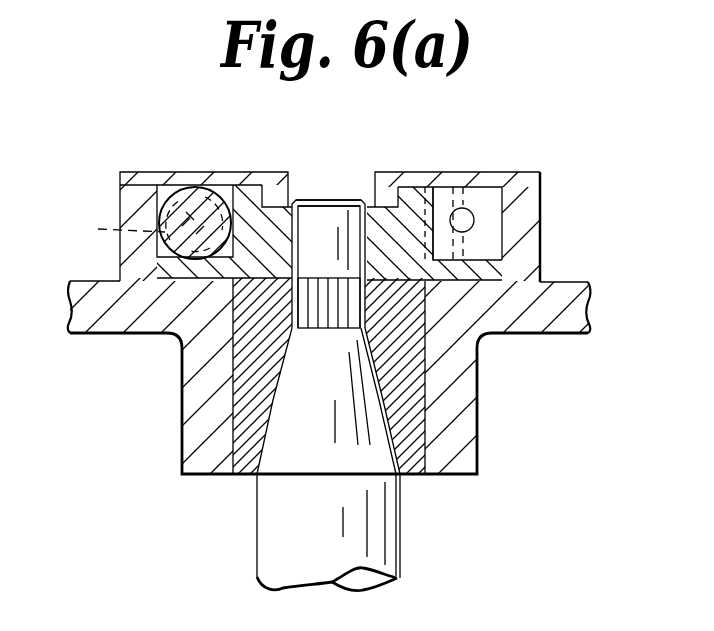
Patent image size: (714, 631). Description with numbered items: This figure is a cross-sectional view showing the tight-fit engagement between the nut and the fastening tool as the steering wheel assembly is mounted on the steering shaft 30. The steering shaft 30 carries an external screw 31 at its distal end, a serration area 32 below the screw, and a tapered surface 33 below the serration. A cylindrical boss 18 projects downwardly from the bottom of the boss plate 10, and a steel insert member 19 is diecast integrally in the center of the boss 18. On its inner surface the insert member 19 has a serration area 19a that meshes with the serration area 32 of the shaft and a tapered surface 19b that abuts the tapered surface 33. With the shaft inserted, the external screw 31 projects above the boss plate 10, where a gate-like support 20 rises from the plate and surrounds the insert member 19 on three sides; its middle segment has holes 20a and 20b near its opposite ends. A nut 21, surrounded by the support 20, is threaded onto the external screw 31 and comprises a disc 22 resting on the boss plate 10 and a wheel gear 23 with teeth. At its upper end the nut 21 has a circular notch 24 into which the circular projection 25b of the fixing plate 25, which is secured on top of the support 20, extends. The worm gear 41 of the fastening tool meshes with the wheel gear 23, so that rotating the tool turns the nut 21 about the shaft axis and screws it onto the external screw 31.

The boss plate 10 is at (592, 312).
The cylindrical boss 18 is at (478, 445).
The insert member 19 is at (413, 467).
The serration area 19a is at (356, 304).
The tapered surface 19b is at (257, 480).
The support 20 is at (120, 190).
The hole 20a is at (110, 223).
The hole 20b is at (475, 216).
The nut 21 is at (245, 190).
The disc 22 is at (483, 270).
The wheel gear 23 is at (430, 210).
The circular notch 24 is at (383, 195).
The fixing plate 25 is at (502, 180).
The circular projection 25b is at (283, 192).
The steering shaft 30 is at (400, 557).
The external screw 31 is at (338, 215).
The serration area 32 is at (320, 205).
The tapered surface 33 is at (285, 424).
The worm gear 41 is at (172, 200).